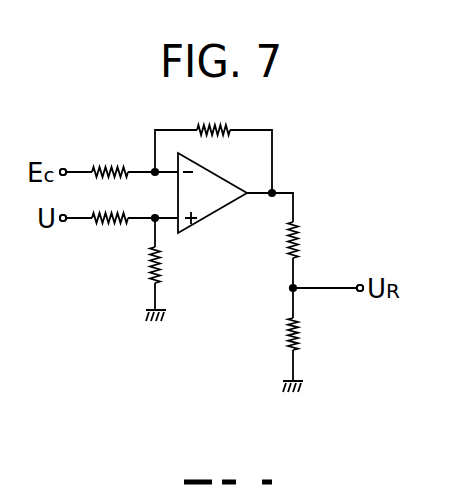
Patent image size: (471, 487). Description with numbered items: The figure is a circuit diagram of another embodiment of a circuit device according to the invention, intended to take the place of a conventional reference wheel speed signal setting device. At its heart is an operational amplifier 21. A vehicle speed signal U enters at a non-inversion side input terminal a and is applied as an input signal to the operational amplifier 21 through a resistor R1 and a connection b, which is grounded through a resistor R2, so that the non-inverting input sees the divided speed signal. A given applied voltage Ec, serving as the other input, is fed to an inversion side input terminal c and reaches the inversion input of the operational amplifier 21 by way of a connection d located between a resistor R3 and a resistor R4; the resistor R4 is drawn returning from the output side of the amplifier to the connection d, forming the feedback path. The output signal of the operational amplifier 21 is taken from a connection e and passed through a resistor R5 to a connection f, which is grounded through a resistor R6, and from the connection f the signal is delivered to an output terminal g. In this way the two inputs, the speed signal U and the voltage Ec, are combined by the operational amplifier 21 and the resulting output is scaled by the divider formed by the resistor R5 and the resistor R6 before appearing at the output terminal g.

The operational amplifier 21 is at (219, 209).
The resistor R1 is at (109, 232).
The resistor R2 is at (172, 265).
The resistor R3 is at (109, 160).
The resistor R4 is at (213, 145).
The resistor R5 is at (308, 240).
The resistor R6 is at (308, 336).
The non-inversion side input terminal a is at (57, 234).
The connection b is at (153, 221).
The inversion side input terminal c is at (64, 168).
The connection d is at (153, 175).
The connection e is at (271, 197).
The connection f is at (290, 287).
The output terminal g is at (355, 301).